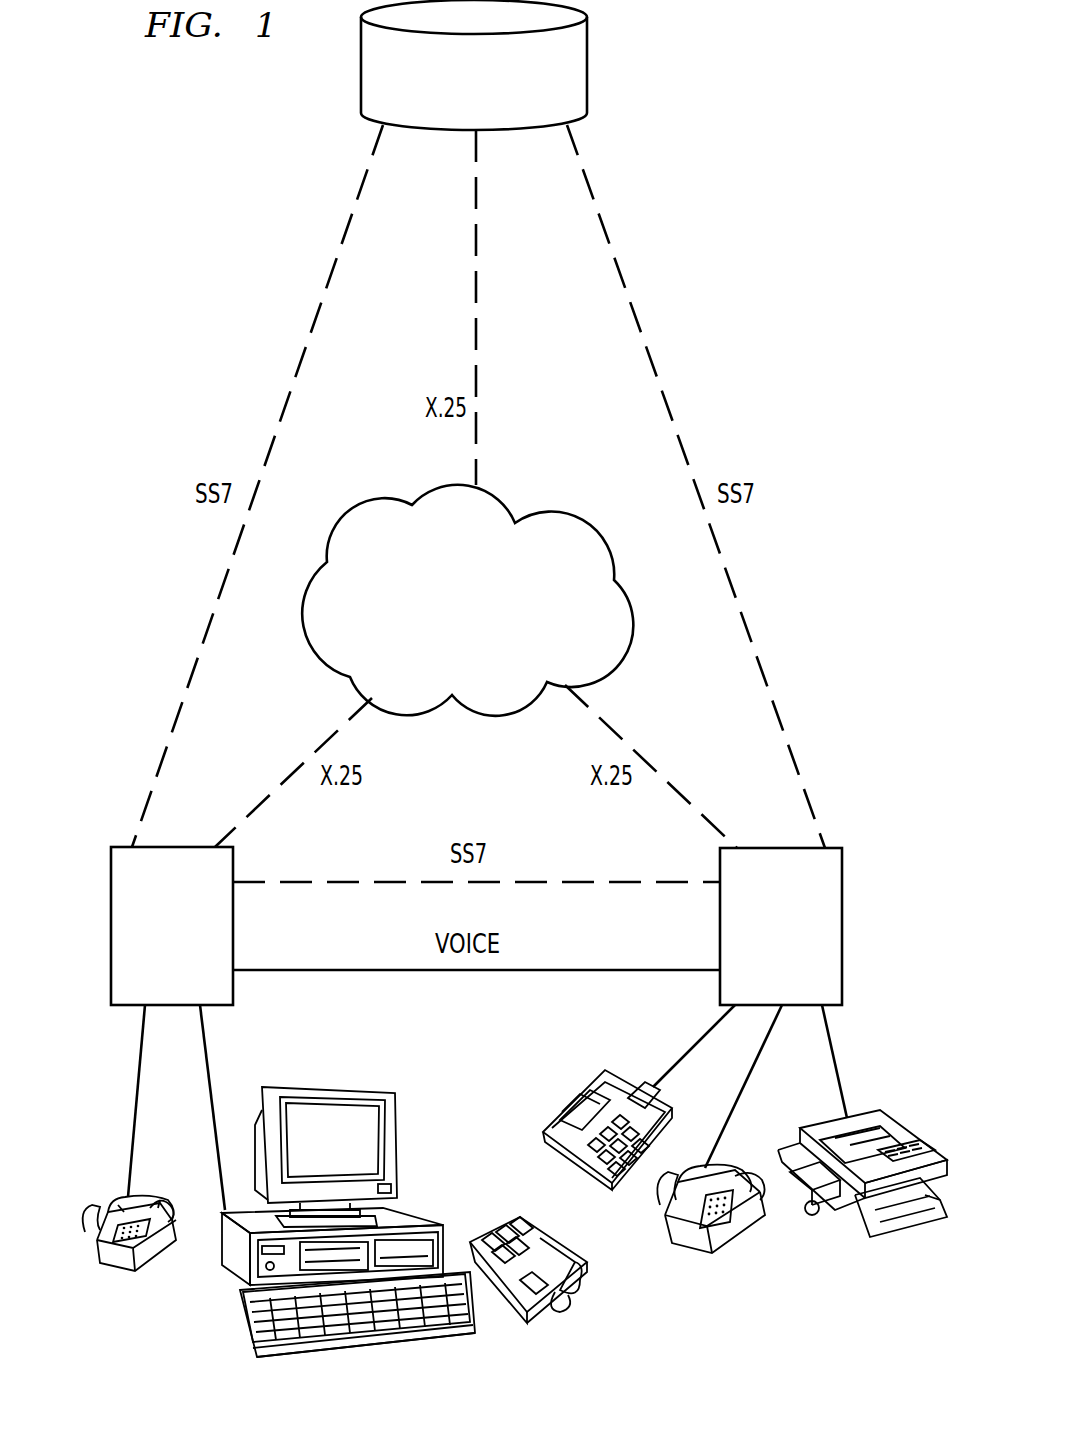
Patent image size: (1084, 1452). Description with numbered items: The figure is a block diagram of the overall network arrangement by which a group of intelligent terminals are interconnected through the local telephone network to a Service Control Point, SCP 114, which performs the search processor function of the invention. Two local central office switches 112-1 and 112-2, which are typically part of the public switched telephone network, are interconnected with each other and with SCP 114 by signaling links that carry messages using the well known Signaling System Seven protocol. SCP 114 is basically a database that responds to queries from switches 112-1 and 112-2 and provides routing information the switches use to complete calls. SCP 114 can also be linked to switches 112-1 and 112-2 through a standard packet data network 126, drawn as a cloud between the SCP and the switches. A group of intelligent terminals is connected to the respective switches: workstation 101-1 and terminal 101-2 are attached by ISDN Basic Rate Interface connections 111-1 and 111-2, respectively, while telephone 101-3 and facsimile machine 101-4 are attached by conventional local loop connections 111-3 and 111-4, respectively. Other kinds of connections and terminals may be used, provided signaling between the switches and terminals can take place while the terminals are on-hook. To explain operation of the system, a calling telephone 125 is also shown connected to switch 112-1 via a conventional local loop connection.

The Service Control Point (SCP) 114 is at (588, 68).
The X.25 packet data network 126 is at (540, 512).
The local central office switch 112-1 is at (233, 997).
The local central office switch 112-2 is at (842, 918).
The ISDN Basic Rate Interface connection 111-1 is at (213, 1075).
The ISDN Basic Rate Interface connection 111-2 is at (677, 1063).
The local loop connection 111-3 is at (727, 1130).
The local loop connection 111-4 is at (846, 1031).
The calling telephone 125 is at (118, 1196).
The workstation 101-1 is at (227, 1268).
The terminal 101-2 is at (592, 1073).
The telephone 101-3 is at (735, 1250).
The facsimile machine 101-4 is at (868, 1112).